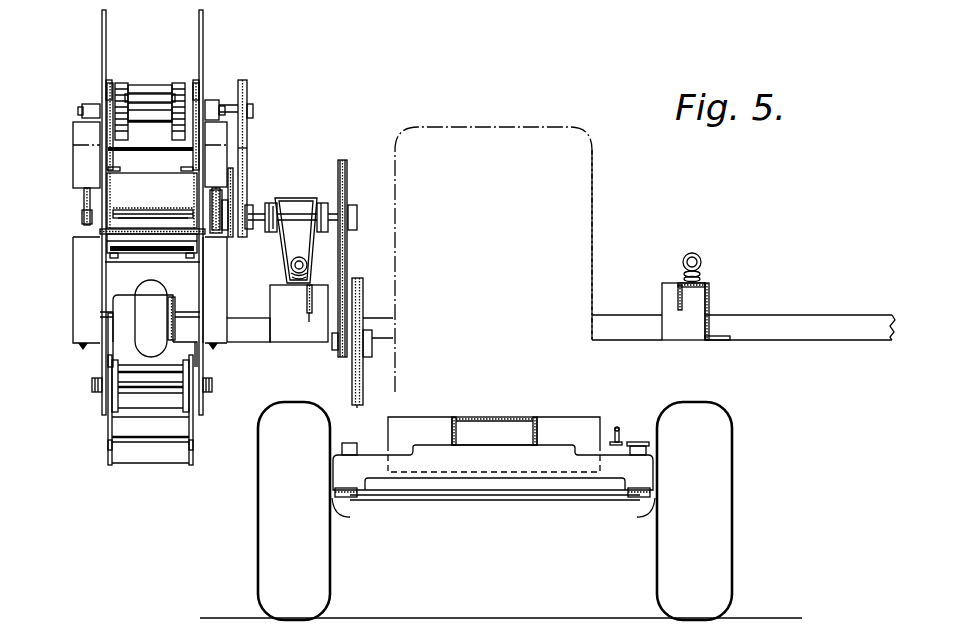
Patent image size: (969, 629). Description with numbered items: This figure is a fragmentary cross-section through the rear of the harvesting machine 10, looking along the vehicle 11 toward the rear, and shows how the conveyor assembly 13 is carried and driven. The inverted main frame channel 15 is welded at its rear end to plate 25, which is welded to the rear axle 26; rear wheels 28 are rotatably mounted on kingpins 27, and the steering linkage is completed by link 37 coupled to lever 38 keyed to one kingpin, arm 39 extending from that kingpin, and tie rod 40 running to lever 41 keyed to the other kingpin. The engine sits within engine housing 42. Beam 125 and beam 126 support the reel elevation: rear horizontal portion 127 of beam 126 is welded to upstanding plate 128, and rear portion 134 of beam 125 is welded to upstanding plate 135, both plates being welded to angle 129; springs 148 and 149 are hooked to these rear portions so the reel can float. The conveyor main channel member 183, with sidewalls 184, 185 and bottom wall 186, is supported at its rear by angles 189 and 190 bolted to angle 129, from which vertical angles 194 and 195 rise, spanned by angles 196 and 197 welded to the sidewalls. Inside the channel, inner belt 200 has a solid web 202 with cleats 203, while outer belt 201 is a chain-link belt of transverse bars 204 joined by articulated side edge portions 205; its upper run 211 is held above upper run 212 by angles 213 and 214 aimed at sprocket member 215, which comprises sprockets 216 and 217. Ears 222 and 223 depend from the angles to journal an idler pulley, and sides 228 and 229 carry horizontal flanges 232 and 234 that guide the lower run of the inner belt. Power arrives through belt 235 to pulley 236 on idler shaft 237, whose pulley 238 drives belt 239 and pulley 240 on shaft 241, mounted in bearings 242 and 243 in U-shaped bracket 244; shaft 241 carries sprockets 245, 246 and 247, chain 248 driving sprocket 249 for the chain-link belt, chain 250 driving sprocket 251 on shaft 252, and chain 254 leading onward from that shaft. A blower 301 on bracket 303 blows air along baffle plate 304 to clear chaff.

The harvesting machine 10 is at (494, 97).
The vehicle 11 is at (488, 410).
The conveyor assembly 13 is at (168, 38).
The main frame channel 15 is at (528, 417).
The plate 25 is at (436, 400).
The rear axle 26 is at (437, 478).
The kingpin 27 is at (348, 517).
The rear wheel 28 is at (262, 560).
The link 37 is at (617, 428).
The lever 38 is at (628, 442).
The arm 39 is at (655, 495).
The tie rod 40 is at (524, 500).
The lever 41 is at (333, 492).
The engine housing 42 is at (602, 184).
The beam 125 is at (710, 278).
The beam 126 is at (307, 318).
The rear horizontal portion 127 is at (307, 304).
The upstanding plate 128 is at (270, 290).
The angle 129 is at (383, 318).
The rear portion 134 is at (678, 295).
The upstanding plate 135 is at (700, 303).
The spring 148 is at (692, 252).
The spring 149 is at (299, 258).
The main channel member 183 is at (120, 257).
The sidewall 184 is at (205, 32).
The sidewall 185 is at (102, 13).
The bottom wall 186 is at (143, 210).
The angle 189 is at (78, 346).
The angle 190 is at (215, 348).
The vertical angle 194 is at (78, 162).
The vertical angle 195 is at (207, 285).
The angle 196 is at (78, 133).
The angle 197 is at (240, 132).
The inner belt 200 is at (97, 243).
The outer belt 201 is at (104, 470).
The continuous solid web 202 is at (183, 223).
The cleat 203 is at (187, 207).
The transverse bar 204 is at (145, 445).
The articulated side edge portion 205 is at (100, 78).
The upper run 211 is at (160, 147).
The upper run 212 is at (143, 222).
The angle 213 is at (110, 172).
The angle 214 is at (188, 172).
The sprocket member 215 is at (150, 85).
The sprocket 216 is at (125, 83).
The sprocket 217 is at (178, 83).
The ear 222 is at (97, 393).
The ear 223 is at (206, 393).
The side 228 is at (105, 250).
The side 229 is at (213, 258).
The horizontal flange 232 is at (108, 262).
The horizontal flange 234 is at (190, 251).
The belt 235 is at (356, 408).
The pulley 236 is at (366, 378).
The idler shaft 237 is at (394, 350).
The pulley 238 is at (337, 352).
The belt 239 is at (344, 259).
The pulley 240 is at (346, 163).
The shaft 241 is at (357, 217).
The bearing 242 is at (298, 200).
The bearing 243 is at (328, 208).
The U-shaped bracket 244 is at (312, 256).
The sprocket 245 is at (236, 237).
The sprocket 246 is at (226, 240).
The sprocket 247 is at (202, 242).
The chain 248 is at (244, 147).
The sprocket 249 is at (248, 100).
The chain 250 is at (248, 195).
The sprocket 251 is at (233, 168).
The shaft 252 is at (82, 193).
The chain 254 is at (82, 217).
The blower 301 is at (118, 303).
The bracket 303 is at (248, 330).
The baffle plate 304 is at (108, 283).